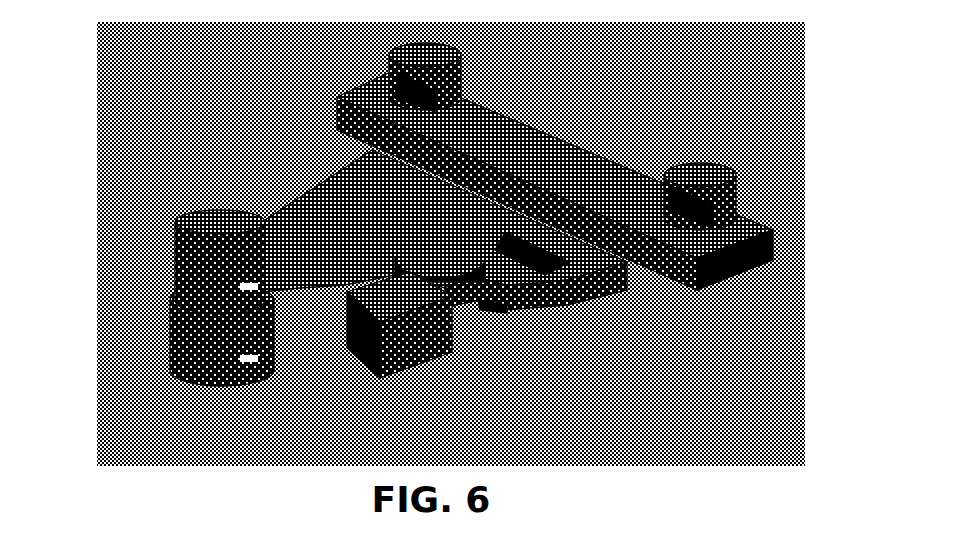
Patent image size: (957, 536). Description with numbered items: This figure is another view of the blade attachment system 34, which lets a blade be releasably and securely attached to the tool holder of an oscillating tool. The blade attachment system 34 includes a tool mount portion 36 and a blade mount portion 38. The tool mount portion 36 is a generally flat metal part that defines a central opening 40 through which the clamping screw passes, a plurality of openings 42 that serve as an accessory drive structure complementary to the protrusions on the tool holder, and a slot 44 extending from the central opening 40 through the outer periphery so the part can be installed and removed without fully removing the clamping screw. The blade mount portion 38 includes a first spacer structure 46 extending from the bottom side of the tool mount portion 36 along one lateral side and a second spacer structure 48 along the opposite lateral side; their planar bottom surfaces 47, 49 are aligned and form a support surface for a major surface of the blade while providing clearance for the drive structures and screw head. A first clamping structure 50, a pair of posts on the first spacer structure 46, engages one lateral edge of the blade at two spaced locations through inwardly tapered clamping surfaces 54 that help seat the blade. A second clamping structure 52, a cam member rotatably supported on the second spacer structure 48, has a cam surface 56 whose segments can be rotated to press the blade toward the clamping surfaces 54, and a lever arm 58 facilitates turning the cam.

The blade attachment system 34 is at (412, 225).
The tool mount portion 36 is at (465, 244).
The blade mount portion 38 is at (342, 235).
The central opening 40 is at (420, 273).
The openings 42 is at (540, 251).
The slot 44 is at (478, 305).
The first spacer structure 46 is at (385, 100).
The planar bottom surface 47 is at (500, 150).
The second spacer structure 48 is at (215, 216).
The planar bottom surface 49 is at (184, 209).
The first clamping structure 50 is at (539, 170).
The second clamping structure 52 is at (172, 328).
The clamping surface 54 is at (425, 100).
The cam surface 56 is at (268, 296).
The lever arm 58 is at (325, 214).